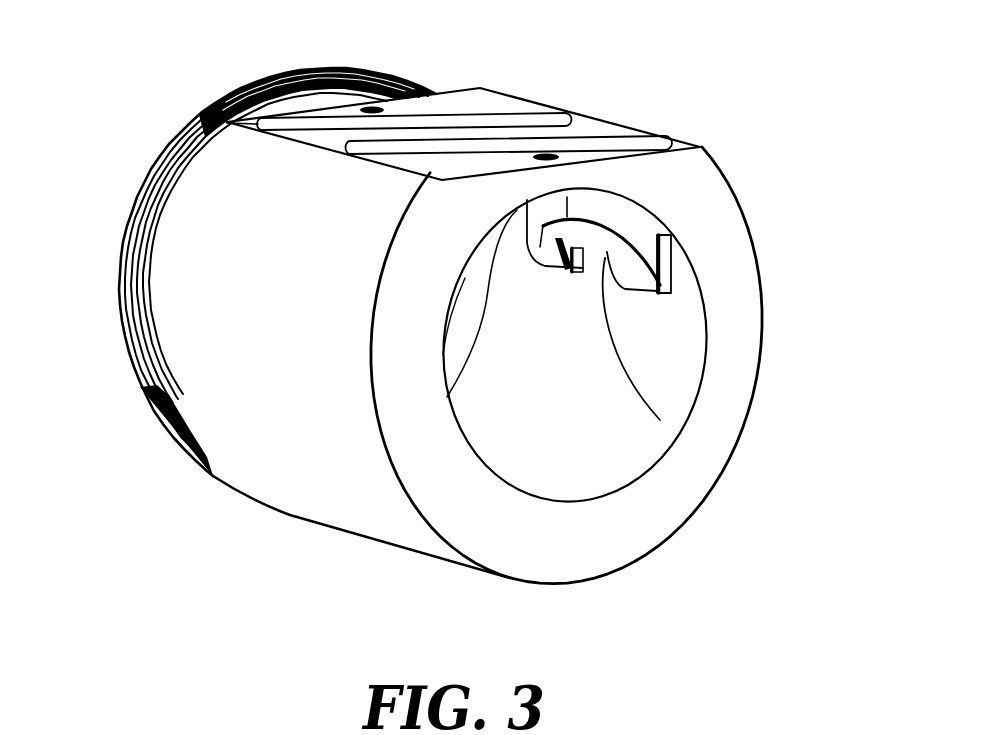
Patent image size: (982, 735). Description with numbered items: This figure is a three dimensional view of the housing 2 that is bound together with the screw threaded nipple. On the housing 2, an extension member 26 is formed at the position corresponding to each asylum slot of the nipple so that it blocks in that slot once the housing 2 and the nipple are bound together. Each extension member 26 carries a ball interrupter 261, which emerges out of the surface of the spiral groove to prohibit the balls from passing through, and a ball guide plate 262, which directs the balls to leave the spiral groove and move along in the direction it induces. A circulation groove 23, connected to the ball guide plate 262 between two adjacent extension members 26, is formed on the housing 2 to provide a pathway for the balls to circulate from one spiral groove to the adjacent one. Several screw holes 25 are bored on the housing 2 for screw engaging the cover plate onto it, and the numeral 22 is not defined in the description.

The housing 2 is at (270, 497).
The threaded portion 22 is at (140, 387).
The circulation groove 23 is at (540, 120).
The screw hole 25 is at (383, 108).
The extension member 26 is at (637, 227).
The ball interrupter 261 is at (660, 420).
The ball guide plate 262 is at (673, 278).